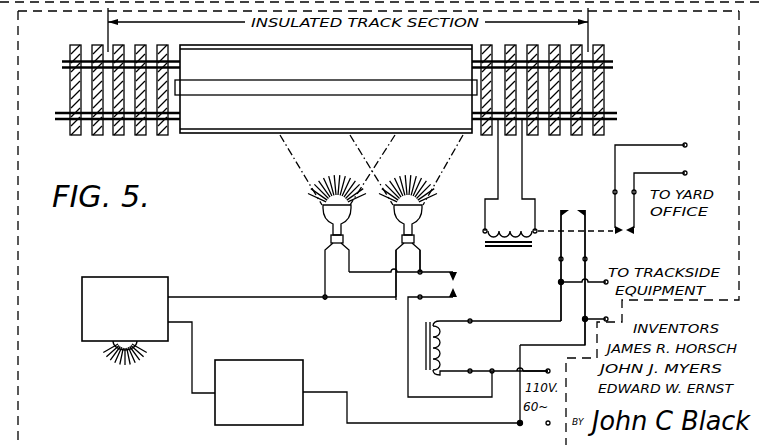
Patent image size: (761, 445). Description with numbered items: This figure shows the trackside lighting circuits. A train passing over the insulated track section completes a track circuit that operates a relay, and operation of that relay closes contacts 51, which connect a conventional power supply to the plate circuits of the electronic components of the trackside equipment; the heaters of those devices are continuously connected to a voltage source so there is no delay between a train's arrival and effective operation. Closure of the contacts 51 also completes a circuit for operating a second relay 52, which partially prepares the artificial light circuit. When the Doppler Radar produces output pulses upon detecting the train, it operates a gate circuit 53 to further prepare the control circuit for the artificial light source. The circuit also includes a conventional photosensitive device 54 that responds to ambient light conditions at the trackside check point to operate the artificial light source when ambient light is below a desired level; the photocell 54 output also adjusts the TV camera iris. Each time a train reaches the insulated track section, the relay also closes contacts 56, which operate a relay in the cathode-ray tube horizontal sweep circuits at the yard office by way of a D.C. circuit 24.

The D.C. circuit 24 is at (685, 145).
The contacts 51 is at (575, 210).
The second relay 52 is at (447, 343).
The gate circuit 53 is at (293, 360).
The photosensitive device 54 is at (150, 277).
The contacts 56 is at (627, 231).